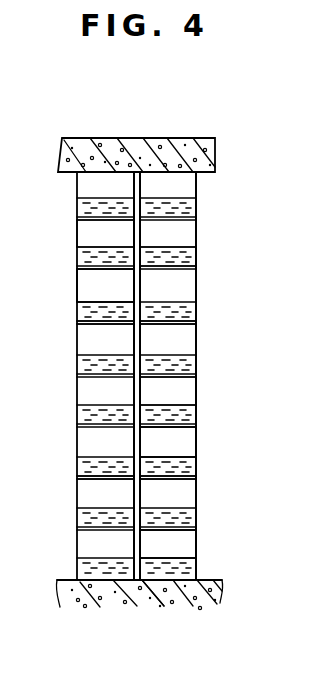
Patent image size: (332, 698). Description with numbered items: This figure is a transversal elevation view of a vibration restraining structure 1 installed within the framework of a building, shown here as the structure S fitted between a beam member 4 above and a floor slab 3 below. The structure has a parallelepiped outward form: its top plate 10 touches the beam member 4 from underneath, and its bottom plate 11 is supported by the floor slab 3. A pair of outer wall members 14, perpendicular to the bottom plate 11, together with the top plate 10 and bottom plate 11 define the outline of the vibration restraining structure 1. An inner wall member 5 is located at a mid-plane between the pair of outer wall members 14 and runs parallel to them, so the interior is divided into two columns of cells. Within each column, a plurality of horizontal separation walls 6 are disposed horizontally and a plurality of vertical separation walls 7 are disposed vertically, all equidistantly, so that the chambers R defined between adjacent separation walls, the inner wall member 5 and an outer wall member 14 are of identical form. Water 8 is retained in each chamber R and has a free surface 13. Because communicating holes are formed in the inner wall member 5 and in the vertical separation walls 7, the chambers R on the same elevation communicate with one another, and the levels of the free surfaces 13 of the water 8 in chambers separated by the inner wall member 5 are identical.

The vibration restraining structure 1 is at (200, 290).
The floor slab 3 is at (207, 582).
The beam member 4 is at (197, 172).
The inner wall member 5 is at (140, 344).
The horizontal separation wall 6 is at (197, 325).
The vertical separation wall 7 is at (77, 182).
The water 8 is at (104, 210).
The top plate 10 is at (155, 171).
The bottom plate 11 is at (144, 583).
The free surface 13 is at (175, 252).
The outer wall member 14 is at (197, 392).
The structure S is at (206, 132).
The chamber R is at (112, 300).